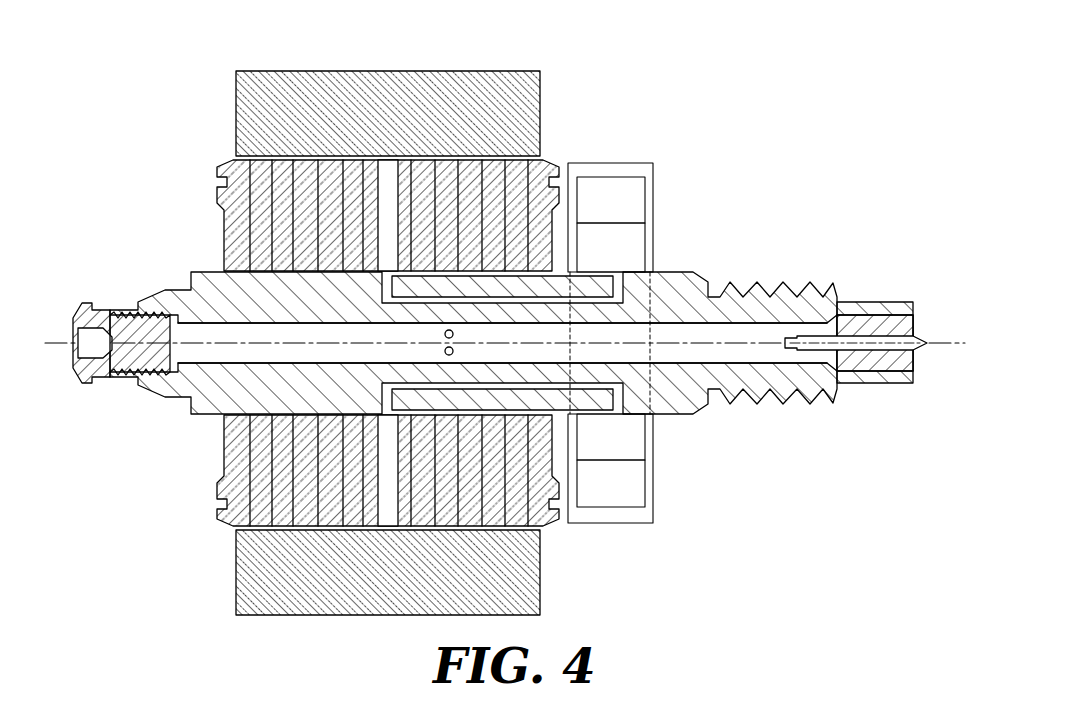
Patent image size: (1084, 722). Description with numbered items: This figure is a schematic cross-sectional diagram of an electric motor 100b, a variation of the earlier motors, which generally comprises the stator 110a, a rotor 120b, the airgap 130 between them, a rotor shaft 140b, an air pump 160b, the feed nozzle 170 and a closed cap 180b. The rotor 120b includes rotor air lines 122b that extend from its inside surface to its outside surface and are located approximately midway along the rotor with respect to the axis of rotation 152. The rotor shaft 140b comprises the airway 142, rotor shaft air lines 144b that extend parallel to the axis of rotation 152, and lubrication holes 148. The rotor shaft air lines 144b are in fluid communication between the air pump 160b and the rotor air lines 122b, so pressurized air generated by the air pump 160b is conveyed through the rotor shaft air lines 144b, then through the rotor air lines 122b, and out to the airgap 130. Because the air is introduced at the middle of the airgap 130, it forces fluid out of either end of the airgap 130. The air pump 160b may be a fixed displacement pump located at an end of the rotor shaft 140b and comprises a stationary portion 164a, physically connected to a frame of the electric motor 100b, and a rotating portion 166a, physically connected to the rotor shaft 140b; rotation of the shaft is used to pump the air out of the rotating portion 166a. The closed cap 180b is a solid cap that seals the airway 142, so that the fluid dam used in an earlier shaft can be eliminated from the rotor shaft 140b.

The electric motor 100b is at (178, 66).
The stator 110a is at (236, 122).
The rotor 120b is at (224, 237).
The rotor air lines 122b is at (378, 173).
The airgap 130 is at (233, 160).
The rotor shaft 140b is at (672, 271).
The airway 142 is at (268, 356).
The rotor shaft air lines 144b is at (382, 293).
The lubrication holes 148 is at (454, 334).
The axis of rotation 152 is at (950, 342).
The air pump 160b is at (608, 163).
The stationary portion 164a is at (636, 214).
The rotating portion 166a is at (636, 258).
The feed nozzle 170 is at (873, 351).
The closed cap 180b is at (88, 303).